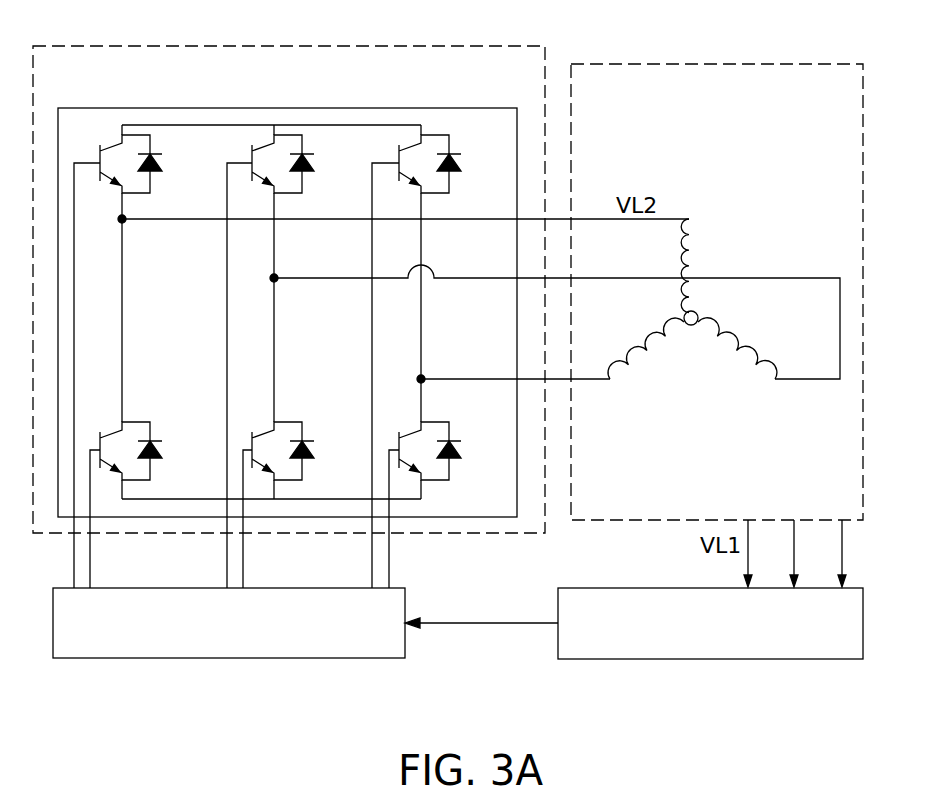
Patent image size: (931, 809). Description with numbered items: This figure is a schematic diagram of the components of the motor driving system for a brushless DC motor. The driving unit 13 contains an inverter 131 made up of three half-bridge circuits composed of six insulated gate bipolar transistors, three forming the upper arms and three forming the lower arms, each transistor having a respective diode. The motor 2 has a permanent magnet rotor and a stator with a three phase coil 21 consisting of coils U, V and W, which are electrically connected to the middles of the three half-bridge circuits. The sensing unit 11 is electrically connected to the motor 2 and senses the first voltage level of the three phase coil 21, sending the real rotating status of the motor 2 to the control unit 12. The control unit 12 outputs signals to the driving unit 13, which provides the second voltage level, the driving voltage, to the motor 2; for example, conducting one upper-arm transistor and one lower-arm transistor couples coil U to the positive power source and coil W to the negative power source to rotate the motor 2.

The driving unit 13 is at (112, 46).
The inverter 131 is at (428, 108).
The motor 2 is at (784, 64).
The three phase coil 21 is at (698, 312).
The control unit 12 is at (283, 588).
The sensing unit 11 is at (598, 588).